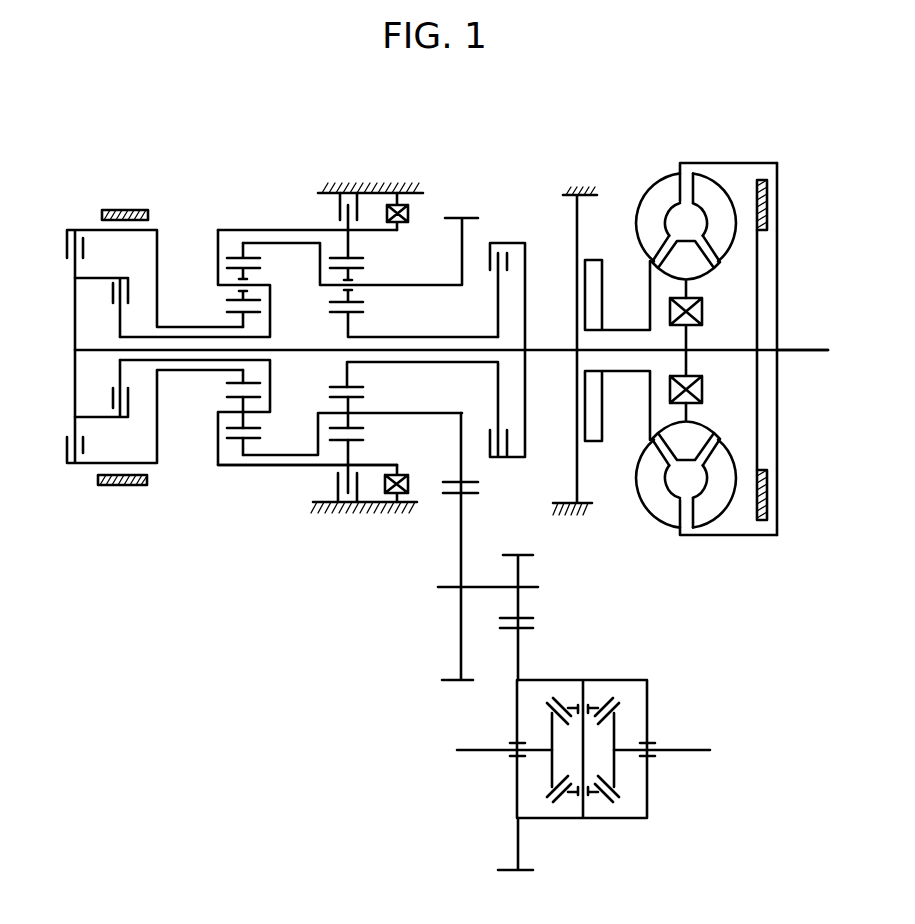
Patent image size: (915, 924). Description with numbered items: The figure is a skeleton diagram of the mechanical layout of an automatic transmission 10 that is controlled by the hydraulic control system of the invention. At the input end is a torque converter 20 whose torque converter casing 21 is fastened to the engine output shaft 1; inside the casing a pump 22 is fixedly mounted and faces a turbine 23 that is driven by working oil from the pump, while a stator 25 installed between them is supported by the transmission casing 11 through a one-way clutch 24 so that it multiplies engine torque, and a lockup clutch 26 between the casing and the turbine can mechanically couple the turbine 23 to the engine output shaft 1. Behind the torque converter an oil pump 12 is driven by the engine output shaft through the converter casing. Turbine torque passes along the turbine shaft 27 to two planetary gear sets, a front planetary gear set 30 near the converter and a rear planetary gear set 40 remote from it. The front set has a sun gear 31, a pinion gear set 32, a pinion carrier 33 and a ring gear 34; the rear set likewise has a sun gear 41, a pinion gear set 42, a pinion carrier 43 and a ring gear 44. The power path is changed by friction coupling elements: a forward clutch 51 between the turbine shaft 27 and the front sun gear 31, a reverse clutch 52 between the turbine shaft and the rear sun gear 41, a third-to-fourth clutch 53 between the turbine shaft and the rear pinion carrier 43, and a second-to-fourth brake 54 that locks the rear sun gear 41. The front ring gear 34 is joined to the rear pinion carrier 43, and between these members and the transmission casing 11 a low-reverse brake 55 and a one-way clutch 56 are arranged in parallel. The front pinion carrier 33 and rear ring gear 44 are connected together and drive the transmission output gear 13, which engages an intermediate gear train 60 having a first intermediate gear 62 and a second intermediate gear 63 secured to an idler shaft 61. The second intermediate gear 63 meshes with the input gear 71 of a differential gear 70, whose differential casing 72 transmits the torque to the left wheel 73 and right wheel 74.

The engine output shaft 1 is at (807, 352).
The automatic transmission 10 is at (837, 205).
The transmission casing 11 is at (367, 190).
The oil pump 12 is at (603, 293).
The transmission output gear 13 is at (472, 482).
The torque converter 20 is at (780, 185).
The torque converter casing 21 is at (690, 163).
The pump 22 is at (655, 183).
The turbine 23 is at (717, 183).
The one-way clutch 24 is at (698, 323).
The stator 25 is at (698, 282).
The lockup clutch 26 is at (767, 213).
The turbine shaft 27 is at (543, 347).
The front planetary gear set 30 is at (370, 262).
The sun gear 31 is at (353, 387).
The pinion gear set 32 is at (355, 397).
The pinion carrier 33 is at (320, 412).
The ring gear 34 is at (355, 440).
The rear planetary gear set 40 is at (213, 258).
The sun gear 41 is at (232, 385).
The pinion gear set 42 is at (233, 397).
The pinion carrier 43 is at (218, 428).
The ring gear 44 is at (250, 438).
The forward clutch 51 is at (498, 242).
The reverse clutch 52 is at (77, 228).
The 3-4 clutch 53 is at (122, 278).
The 2-4 brake 54 is at (128, 210).
The low-reverse brake 55 is at (338, 210).
The one-way clutch 56 is at (408, 212).
The intermediate gear train 60 is at (537, 577).
The idler shaft 61 is at (477, 583).
The first intermediate gear 62 is at (470, 495).
The second intermediate gear 63 is at (523, 618).
The differential gear 70 is at (662, 678).
The input gear 71 is at (523, 628).
The differential casing 72 is at (615, 680).
The left wheel 73 is at (475, 748).
The right wheel 74 is at (675, 748).